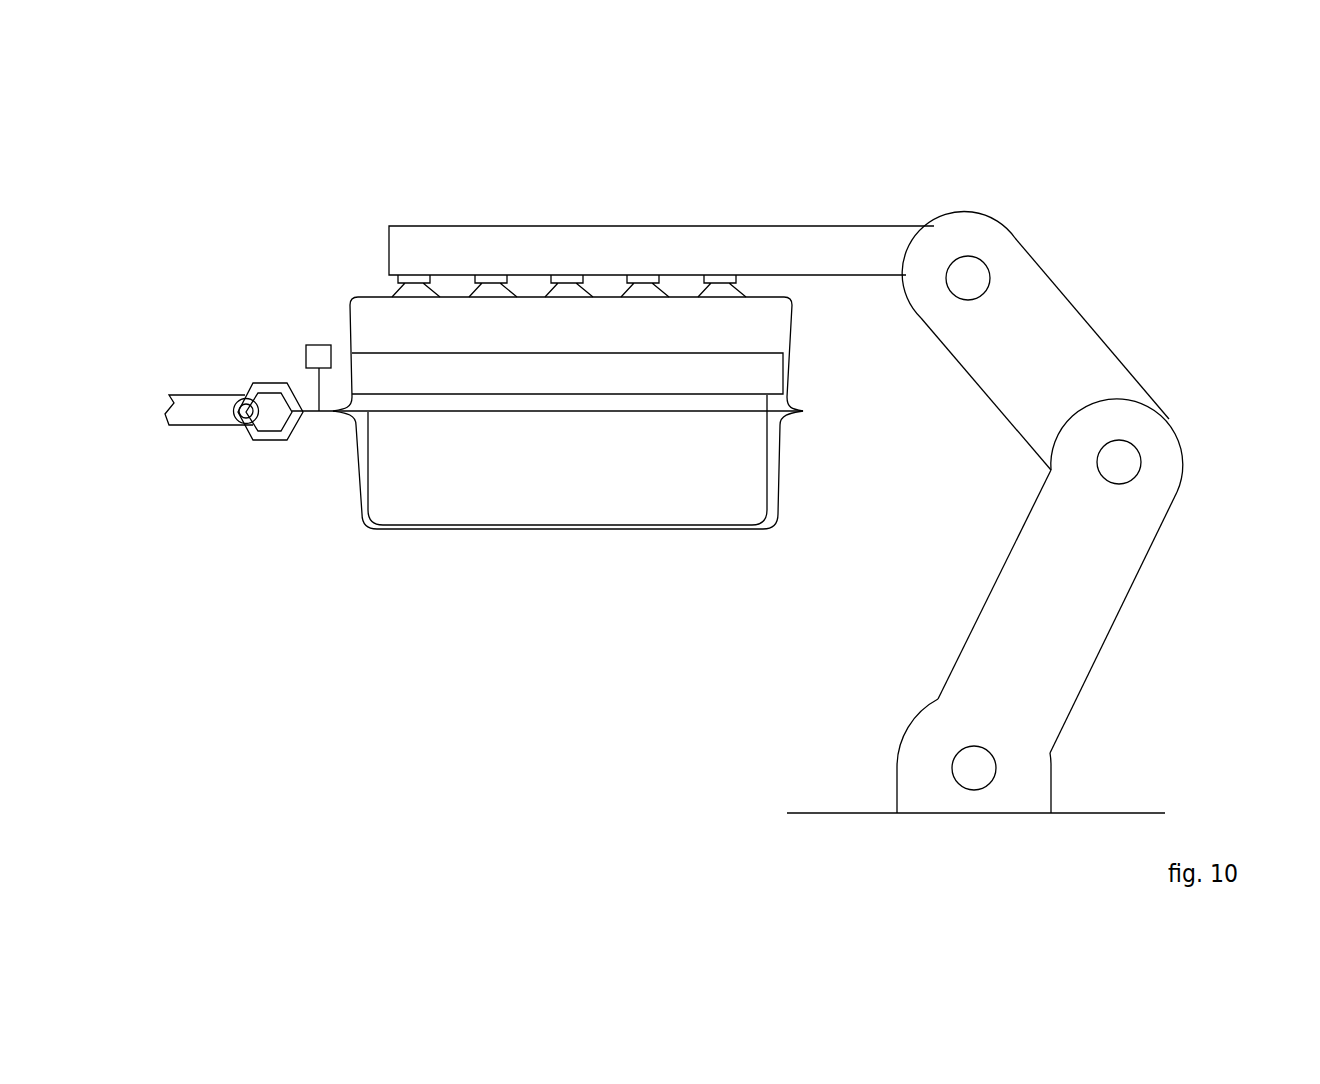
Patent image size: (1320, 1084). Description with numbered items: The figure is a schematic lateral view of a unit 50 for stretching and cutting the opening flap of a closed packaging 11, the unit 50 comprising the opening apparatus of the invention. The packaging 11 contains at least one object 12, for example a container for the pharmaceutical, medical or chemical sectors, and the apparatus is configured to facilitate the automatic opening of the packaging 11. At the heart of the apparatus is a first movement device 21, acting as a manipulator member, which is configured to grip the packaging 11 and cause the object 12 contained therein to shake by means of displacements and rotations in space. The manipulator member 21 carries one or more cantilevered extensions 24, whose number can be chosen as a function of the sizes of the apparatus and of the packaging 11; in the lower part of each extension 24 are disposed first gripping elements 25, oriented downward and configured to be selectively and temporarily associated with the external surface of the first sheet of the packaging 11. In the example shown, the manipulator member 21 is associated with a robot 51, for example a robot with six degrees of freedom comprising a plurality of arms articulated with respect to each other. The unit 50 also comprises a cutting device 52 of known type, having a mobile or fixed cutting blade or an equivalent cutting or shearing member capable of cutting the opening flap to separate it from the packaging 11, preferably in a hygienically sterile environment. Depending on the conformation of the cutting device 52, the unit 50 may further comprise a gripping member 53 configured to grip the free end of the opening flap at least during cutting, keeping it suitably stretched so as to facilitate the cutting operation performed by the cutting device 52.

The unit for stretching and cutting the opening flap 50 is at (1104, 170).
The first movement device 21 is at (841, 216).
The extension 24 is at (397, 237).
The first gripping elements 25 is at (568, 288).
The closed packaging 11 is at (362, 316).
The object 12 is at (634, 506).
The robot 51 is at (1185, 418).
The cutting device 52 is at (297, 340).
The gripping member 53 is at (198, 412).